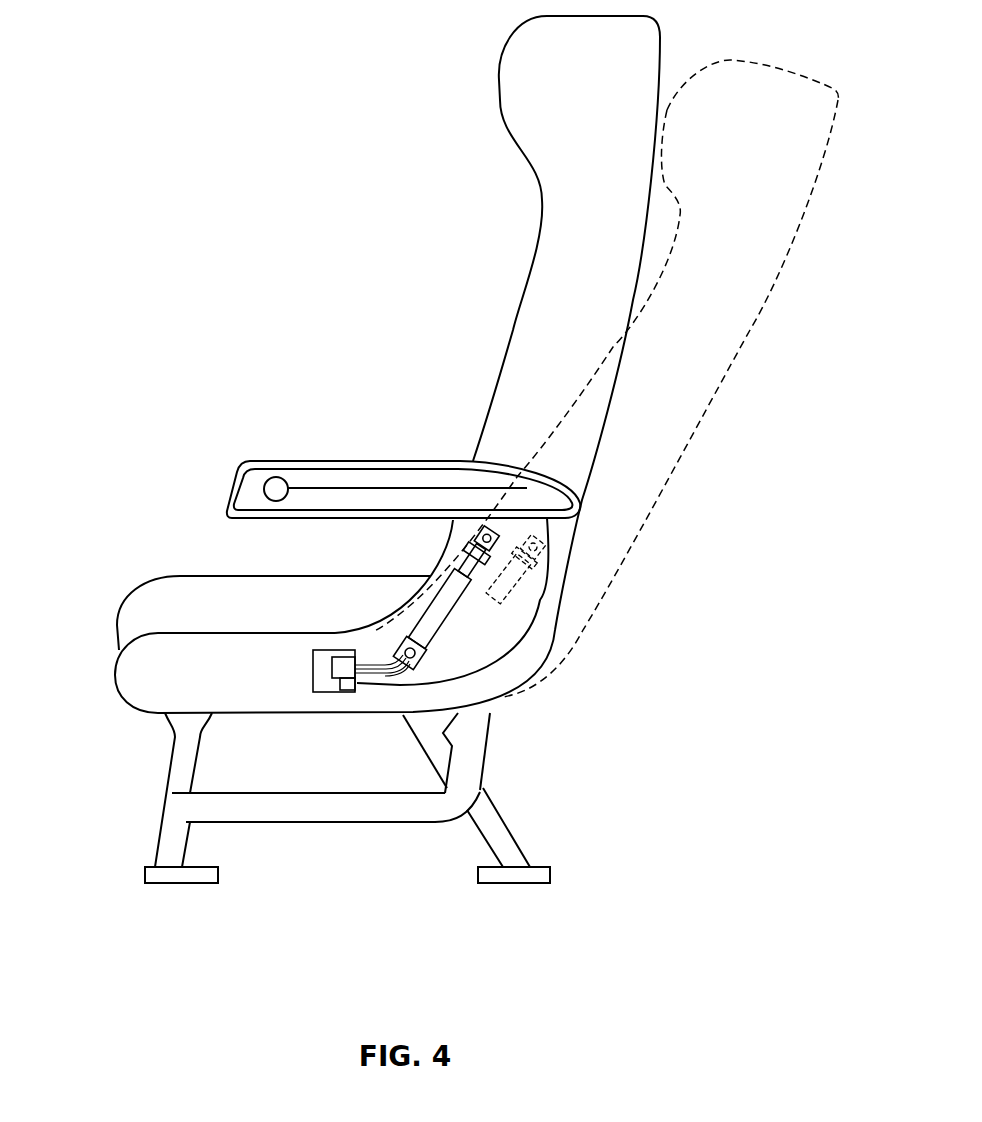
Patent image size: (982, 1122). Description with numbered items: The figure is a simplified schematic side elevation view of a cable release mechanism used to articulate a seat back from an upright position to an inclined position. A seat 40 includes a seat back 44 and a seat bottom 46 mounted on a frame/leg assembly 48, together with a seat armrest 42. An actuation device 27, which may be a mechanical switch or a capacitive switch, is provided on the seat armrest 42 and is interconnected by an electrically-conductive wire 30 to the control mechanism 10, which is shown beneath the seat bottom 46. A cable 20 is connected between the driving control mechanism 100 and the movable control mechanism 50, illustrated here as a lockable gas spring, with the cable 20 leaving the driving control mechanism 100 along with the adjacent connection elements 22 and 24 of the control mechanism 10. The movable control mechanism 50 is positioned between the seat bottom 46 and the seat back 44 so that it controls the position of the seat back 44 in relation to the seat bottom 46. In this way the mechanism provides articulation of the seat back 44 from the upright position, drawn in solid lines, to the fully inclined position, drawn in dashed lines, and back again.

The seat 40 is at (290, 258).
The seat back 44 is at (627, 178).
The electrically-conductive wire 30 is at (548, 632).
The seat armrest 42 is at (398, 462).
The actuation device 27 is at (280, 479).
The seat bottom 46 is at (158, 597).
The frame/leg assembly 48 is at (170, 770).
The movable control mechanism 50 is at (447, 617).
The control mechanism 10 is at (317, 673).
The driving control mechanism 100 is at (338, 657).
The connector 24 is at (340, 689).
The cable 20 is at (380, 683).
The cable 22 is at (403, 690).